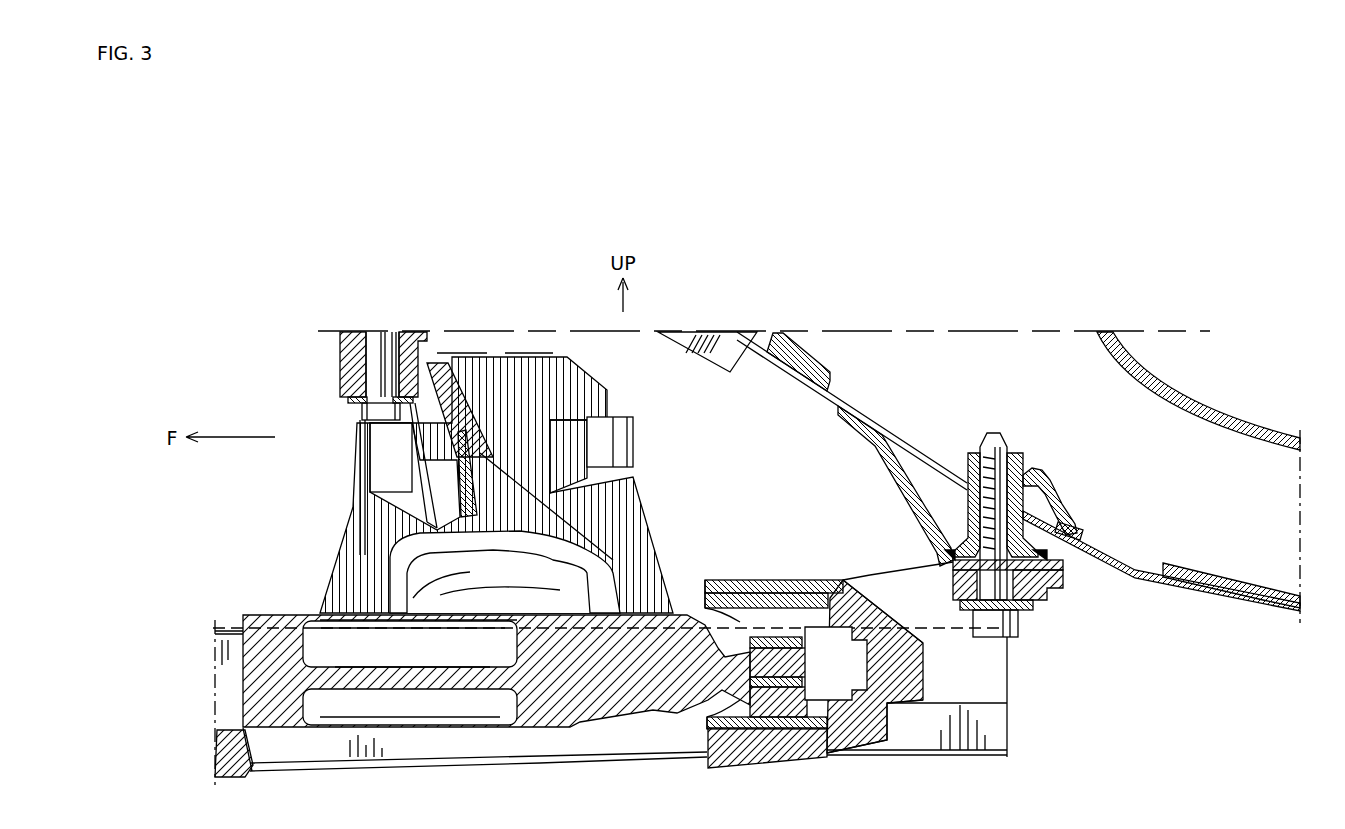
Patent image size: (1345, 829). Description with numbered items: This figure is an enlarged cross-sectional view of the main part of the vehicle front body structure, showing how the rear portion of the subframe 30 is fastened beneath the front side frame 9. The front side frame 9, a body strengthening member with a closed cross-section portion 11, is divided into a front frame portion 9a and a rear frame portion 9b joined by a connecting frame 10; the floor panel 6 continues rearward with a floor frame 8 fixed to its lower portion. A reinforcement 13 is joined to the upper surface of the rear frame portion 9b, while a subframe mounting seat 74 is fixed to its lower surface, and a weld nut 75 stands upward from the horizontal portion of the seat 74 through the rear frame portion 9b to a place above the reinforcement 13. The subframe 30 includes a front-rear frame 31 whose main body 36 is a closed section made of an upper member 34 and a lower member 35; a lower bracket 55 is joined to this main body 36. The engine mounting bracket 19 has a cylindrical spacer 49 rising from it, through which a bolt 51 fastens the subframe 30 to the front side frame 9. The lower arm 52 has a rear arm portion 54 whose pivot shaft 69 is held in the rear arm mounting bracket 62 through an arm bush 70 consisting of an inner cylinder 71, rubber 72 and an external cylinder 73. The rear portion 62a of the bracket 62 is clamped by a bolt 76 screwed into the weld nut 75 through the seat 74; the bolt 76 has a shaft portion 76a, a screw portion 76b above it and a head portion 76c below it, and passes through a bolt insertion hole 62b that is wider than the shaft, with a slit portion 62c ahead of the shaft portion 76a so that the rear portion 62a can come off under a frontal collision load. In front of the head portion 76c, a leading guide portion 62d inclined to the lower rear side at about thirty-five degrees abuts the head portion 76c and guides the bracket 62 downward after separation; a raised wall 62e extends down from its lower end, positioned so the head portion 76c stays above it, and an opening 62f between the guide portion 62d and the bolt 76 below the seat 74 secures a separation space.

The floor panel 6 is at (1222, 403).
The floor frame 8 is at (1212, 565).
The front side frame 9 is at (807, 400).
The front frame portion 9a is at (717, 373).
The rear frame portion 9b is at (1120, 555).
The connecting frame 10 is at (815, 363).
The closed cross-section portion 11 is at (1072, 369).
The reinforcement 13 is at (1043, 485).
The mounting bracket 19 is at (641, 486).
The subframe 30 is at (480, 779).
The front-rear frame 31 is at (621, 779).
The upper member 34 is at (998, 681).
The lower member 35 is at (998, 717).
The main body 36 is at (995, 697).
The spacer 49 is at (340, 359).
The bolt 51 is at (377, 330).
The lower arm 52 is at (609, 630).
The rear arm portion 54 is at (300, 612).
The lower bracket 55 is at (222, 780).
The rear arm mounting bracket 62 is at (762, 571).
The rear portion 62a is at (1063, 582).
The bolt insertion hole 62b is at (1042, 604).
The slit portion 62c is at (950, 584).
The leading guide portion 62d is at (860, 578).
The raised wall 62e is at (930, 677).
The opening 62f is at (921, 606).
The pivot shaft 69 is at (773, 670).
The arm bush 70 is at (793, 571).
The inner cylinder 71 is at (810, 641).
The rubber 72 is at (713, 575).
The external cylinder 73 is at (720, 730).
The subframe mounting seat 74 is at (887, 477).
The weld nut 75 is at (968, 505).
The bolt 76 is at (1000, 422).
The shaft portion 76a is at (1070, 530).
The screw portion 76b is at (1012, 458).
The head portion 76c is at (1020, 632).